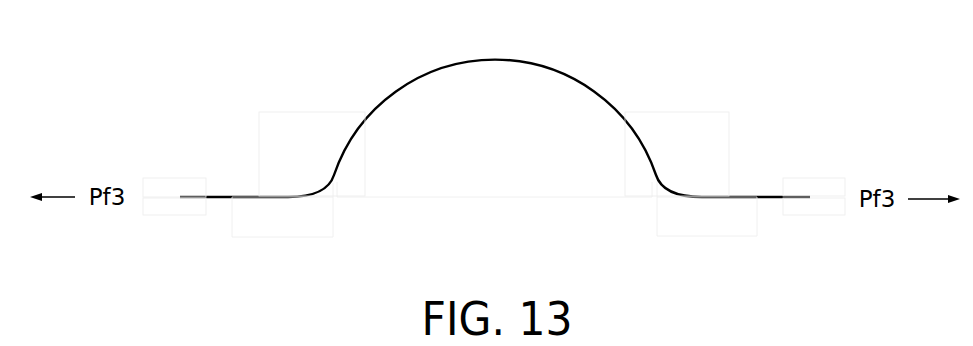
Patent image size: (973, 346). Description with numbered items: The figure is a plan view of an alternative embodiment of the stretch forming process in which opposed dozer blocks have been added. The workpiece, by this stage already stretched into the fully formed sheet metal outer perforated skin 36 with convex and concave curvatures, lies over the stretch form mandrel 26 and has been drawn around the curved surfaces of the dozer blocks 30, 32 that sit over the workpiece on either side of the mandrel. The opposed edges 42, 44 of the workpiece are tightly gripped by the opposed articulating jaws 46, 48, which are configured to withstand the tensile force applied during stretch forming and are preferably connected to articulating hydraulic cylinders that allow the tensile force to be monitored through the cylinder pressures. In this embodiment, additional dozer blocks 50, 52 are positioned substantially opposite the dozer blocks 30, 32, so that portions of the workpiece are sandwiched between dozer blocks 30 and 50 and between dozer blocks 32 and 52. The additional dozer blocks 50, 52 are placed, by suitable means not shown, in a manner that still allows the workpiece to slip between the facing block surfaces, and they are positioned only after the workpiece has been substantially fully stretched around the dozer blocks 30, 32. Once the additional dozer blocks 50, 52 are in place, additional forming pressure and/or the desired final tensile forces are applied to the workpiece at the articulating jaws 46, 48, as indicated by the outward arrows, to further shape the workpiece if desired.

The stretch form mandrel 26 is at (468, 180).
The dozer block 30 is at (302, 112).
The dozer block 32 is at (676, 112).
The sheet metal outer perforated skin 36 is at (575, 80).
The opposed edge of workpiece 42 is at (182, 197).
The opposed edge of workpiece 44 is at (809, 196).
The articulating jaw 46 is at (147, 177).
The articulating jaw 48 is at (845, 187).
The additional dozer block 50 is at (289, 237).
The additional dozer block 52 is at (711, 236).